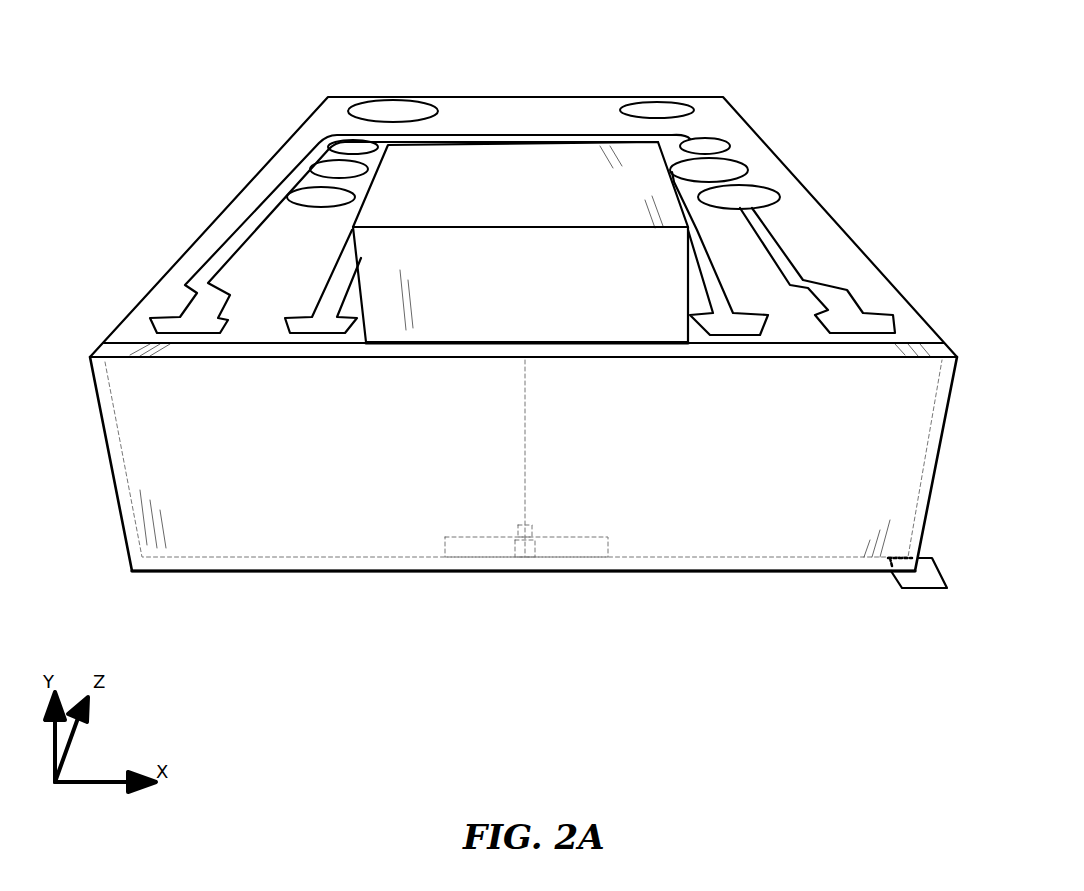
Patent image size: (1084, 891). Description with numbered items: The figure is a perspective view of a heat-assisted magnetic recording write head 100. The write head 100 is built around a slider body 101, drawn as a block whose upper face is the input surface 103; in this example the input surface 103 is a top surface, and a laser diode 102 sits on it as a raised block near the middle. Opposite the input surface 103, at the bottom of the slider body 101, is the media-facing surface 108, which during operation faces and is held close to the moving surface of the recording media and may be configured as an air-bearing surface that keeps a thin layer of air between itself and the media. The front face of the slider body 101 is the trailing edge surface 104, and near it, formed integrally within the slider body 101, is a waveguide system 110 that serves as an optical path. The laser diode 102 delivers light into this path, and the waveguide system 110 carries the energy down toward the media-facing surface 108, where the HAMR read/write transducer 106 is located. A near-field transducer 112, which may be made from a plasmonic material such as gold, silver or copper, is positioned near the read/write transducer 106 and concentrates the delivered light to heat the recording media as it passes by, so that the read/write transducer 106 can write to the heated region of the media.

The HAMR write head 100 is at (840, 168).
The slider body 101 is at (297, 130).
The laser diode 102 is at (475, 152).
The input surface 103 is at (163, 297).
The trailing edge surface 104 is at (202, 545).
The HAMR read/write transducer 106 is at (532, 557).
The media-facing surface 108 is at (940, 590).
The waveguide system 110 is at (525, 438).
The near-field transducer 112 is at (525, 558).